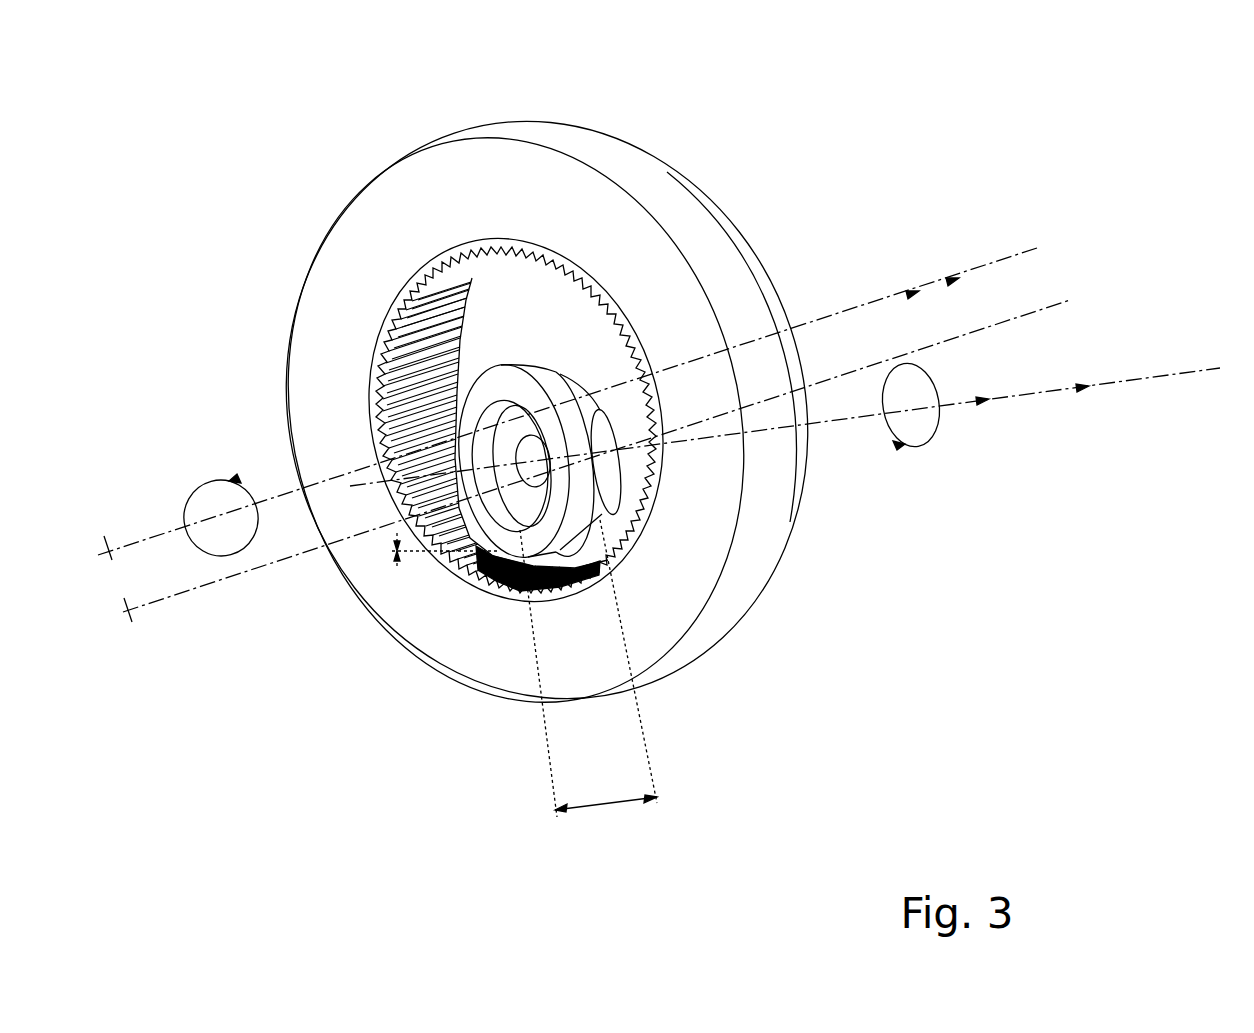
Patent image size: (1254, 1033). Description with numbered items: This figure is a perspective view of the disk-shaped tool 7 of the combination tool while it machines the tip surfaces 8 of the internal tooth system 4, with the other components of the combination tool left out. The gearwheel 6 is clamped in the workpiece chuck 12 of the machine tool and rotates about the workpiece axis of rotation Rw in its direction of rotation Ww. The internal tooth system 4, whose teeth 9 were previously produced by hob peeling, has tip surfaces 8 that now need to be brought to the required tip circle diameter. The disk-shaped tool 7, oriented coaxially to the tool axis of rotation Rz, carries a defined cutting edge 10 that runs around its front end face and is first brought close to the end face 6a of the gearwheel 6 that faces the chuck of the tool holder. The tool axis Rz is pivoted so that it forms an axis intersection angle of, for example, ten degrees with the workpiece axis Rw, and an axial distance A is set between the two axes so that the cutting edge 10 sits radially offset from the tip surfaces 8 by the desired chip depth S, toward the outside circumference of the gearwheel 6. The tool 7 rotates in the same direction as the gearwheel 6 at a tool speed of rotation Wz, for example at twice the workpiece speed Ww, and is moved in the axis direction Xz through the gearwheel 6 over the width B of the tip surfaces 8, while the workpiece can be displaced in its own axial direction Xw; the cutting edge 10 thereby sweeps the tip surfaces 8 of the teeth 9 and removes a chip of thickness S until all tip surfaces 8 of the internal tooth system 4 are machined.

The workpiece chuck 12 is at (433, 180).
The gearwheel 6 is at (387, 320).
The end face 6a is at (463, 318).
The internal tooth system 4 is at (368, 375).
The teeth 9 is at (373, 432).
The tip surfaces 8 is at (457, 580).
The cutting edge 10 is at (507, 366).
The disk-shaped tool 7 is at (613, 580).
The axial direction of the workpiece Xw is at (923, 288).
The axis direction of the tool holder Xz is at (785, 427).
The workpiece axis of rotation Rw is at (847, 308).
The tool axis of rotation Rz is at (1133, 381).
The direction of rotation of the gearwheel Ww is at (220, 512).
The tool speed of rotation Wz is at (911, 412).
The axial distance A is at (587, 461).
The chip depth S is at (446, 562).
The width of the tip surfaces B is at (588, 677).